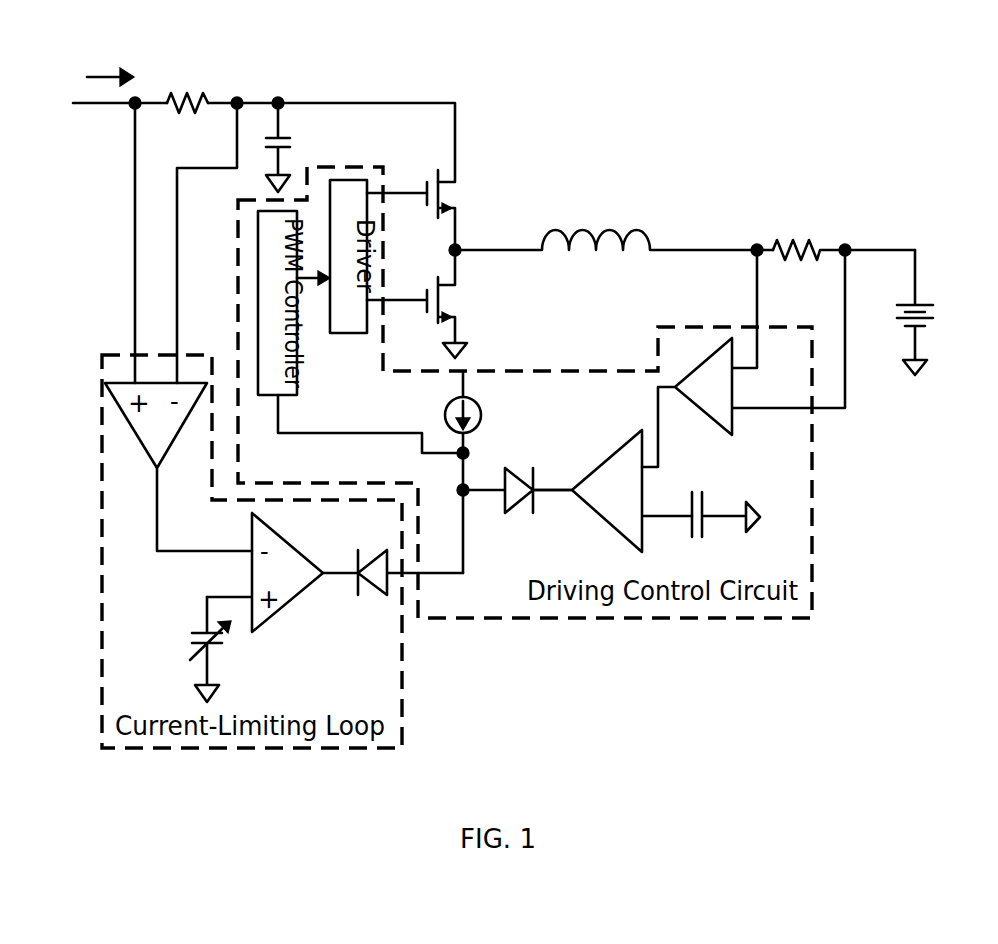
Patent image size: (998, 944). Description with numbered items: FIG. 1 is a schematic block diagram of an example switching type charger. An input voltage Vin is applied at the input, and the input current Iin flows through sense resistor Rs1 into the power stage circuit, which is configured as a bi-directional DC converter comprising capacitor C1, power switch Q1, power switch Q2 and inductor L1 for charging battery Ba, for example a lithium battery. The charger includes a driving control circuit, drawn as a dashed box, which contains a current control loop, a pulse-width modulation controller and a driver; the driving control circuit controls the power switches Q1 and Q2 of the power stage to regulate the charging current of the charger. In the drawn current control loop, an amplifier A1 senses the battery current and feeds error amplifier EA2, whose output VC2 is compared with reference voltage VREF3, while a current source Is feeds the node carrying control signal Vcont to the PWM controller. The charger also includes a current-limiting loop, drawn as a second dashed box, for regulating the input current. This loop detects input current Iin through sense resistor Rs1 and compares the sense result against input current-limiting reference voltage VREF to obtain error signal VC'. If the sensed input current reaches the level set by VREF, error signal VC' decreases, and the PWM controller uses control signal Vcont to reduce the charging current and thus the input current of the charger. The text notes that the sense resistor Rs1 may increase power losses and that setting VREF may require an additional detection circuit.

The input voltage Vin is at (97, 104).
The input current Iin is at (110, 59).
The sense resistor Rs1 is at (193, 84).
The capacitor C1 is at (298, 147).
The power switch Q1 is at (433, 210).
The power switch Q2 is at (433, 304).
The inductor L1 is at (648, 215).
The battery Ba is at (936, 312).
The current sense amplifier A1 is at (743, 358).
The error amplifier EA2 is at (612, 491).
The control voltage of EA2 VC2 is at (556, 488).
The reference voltage 3 VREF3 is at (719, 495).
The current source Is is at (476, 472).
The control signal Vcont is at (370, 424).
The input current-limiting reference voltage VREF is at (234, 649).
The error signal VC' is at (387, 558).